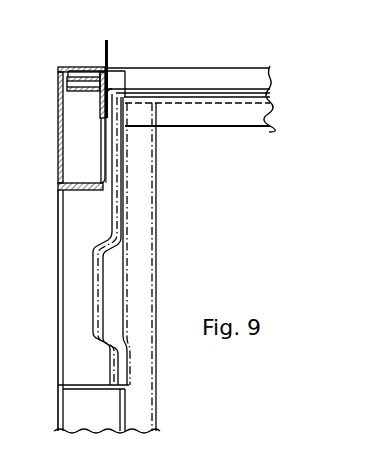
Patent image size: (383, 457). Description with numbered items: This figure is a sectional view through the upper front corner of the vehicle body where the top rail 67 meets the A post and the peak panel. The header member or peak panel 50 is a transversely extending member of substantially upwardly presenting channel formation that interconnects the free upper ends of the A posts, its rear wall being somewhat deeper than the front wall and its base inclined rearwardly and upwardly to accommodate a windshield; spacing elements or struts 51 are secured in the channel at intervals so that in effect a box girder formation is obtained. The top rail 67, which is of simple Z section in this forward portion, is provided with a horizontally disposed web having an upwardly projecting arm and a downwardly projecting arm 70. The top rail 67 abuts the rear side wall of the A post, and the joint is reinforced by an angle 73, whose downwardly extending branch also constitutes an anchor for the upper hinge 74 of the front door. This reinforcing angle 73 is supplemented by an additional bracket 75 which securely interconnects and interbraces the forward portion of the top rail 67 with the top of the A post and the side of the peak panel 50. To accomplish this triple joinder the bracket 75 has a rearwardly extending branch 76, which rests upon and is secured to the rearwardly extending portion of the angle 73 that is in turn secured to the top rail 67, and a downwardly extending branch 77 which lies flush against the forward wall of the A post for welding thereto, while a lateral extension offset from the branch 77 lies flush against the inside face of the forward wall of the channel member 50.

The header member or peak panel 50 is at (60, 119).
The spacing elements or struts 51 is at (79, 76).
The top rail 67 is at (217, 78).
The downwardly projecting arm 70 is at (253, 113).
The angle 73 is at (172, 103).
The upper hinge 74 is at (115, 288).
The bracket 75 is at (138, 92).
The rearwardly extending branch 76 is at (178, 90).
The downwardly extending branch 77 is at (62, 252).